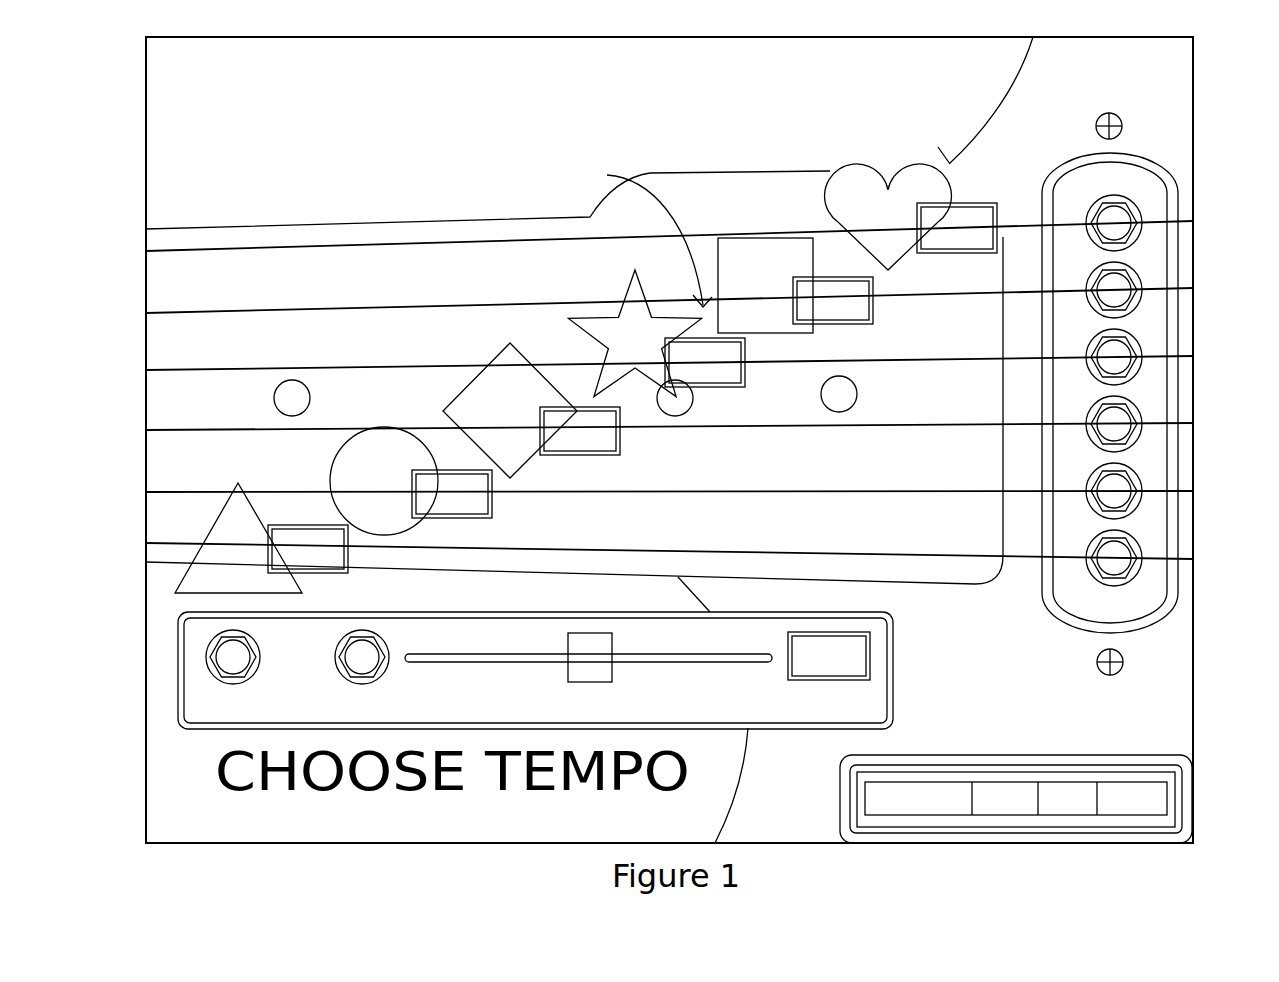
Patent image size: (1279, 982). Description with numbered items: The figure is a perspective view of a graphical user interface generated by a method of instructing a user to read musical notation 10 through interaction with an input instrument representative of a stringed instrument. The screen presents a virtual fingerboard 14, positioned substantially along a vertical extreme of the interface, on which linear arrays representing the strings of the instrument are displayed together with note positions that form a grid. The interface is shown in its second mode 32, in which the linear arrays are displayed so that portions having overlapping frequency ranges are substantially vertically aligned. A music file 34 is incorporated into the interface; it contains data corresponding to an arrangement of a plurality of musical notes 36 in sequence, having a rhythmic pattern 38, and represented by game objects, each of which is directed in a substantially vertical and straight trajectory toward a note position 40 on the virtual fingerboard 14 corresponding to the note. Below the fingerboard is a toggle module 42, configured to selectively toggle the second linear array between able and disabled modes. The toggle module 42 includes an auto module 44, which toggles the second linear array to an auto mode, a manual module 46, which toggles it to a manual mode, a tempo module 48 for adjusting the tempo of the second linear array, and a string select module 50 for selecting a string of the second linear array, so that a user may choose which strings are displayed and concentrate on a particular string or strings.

The method of instructing a user to read musical notation 10 is at (1212, 119).
The virtual fingerboard 14 is at (1210, 307).
The second mode 32 is at (247, 74).
The music file 34 is at (1063, 758).
The musical notes 36 is at (137, 223).
The rhythmic pattern 38 is at (823, 472).
The note position 40 is at (385, 402).
The toggle module 42 is at (893, 668).
The auto module 44 is at (240, 655).
The manual module 46 is at (366, 655).
The tempo module 48 is at (592, 650).
The string select module 50 is at (1096, 196).